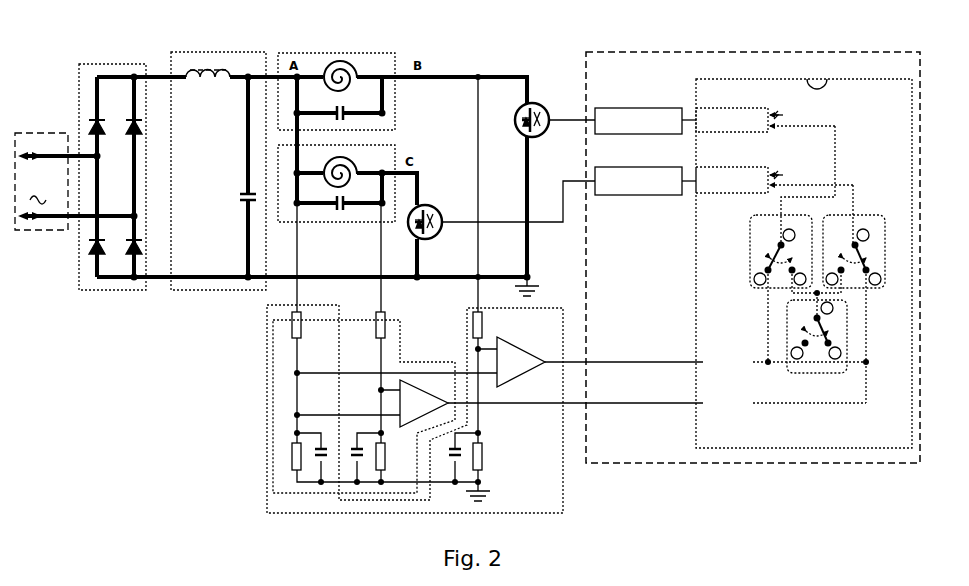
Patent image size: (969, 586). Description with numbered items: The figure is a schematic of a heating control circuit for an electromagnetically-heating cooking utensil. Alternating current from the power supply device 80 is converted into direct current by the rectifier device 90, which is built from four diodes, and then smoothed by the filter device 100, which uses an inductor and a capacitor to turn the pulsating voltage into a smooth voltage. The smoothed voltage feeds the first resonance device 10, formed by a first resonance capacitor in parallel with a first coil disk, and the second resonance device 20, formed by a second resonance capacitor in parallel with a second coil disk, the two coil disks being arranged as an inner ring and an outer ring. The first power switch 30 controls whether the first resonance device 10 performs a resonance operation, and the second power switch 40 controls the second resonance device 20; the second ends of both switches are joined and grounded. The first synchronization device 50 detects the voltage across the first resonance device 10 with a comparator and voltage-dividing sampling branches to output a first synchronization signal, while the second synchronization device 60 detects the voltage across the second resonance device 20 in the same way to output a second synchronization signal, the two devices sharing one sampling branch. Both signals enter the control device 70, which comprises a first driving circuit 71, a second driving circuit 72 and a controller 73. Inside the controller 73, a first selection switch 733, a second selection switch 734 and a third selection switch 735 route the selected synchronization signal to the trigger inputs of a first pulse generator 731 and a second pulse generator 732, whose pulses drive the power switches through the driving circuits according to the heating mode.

The first resonance device 10 is at (357, 54).
The second resonance device 20 is at (324, 224).
The first power switch 30 is at (545, 106).
The second power switch 40 is at (435, 208).
The first synchronization device 50 is at (485, 358).
The second synchronization device 60 is at (418, 363).
The control device 70 is at (661, 60).
The first driving circuit 71 is at (636, 108).
The second driving circuit 72 is at (634, 195).
The controller 73 is at (846, 86).
The first pulse generator 731 is at (768, 109).
The second pulse generator 732 is at (768, 165).
The first selection switch 733 is at (758, 250).
The second selection switch 734 is at (878, 248).
The third selection switch 735 is at (818, 374).
The power supply device 80 is at (59, 134).
The rectifier device 90 is at (122, 65).
The filter device 100 is at (222, 52).